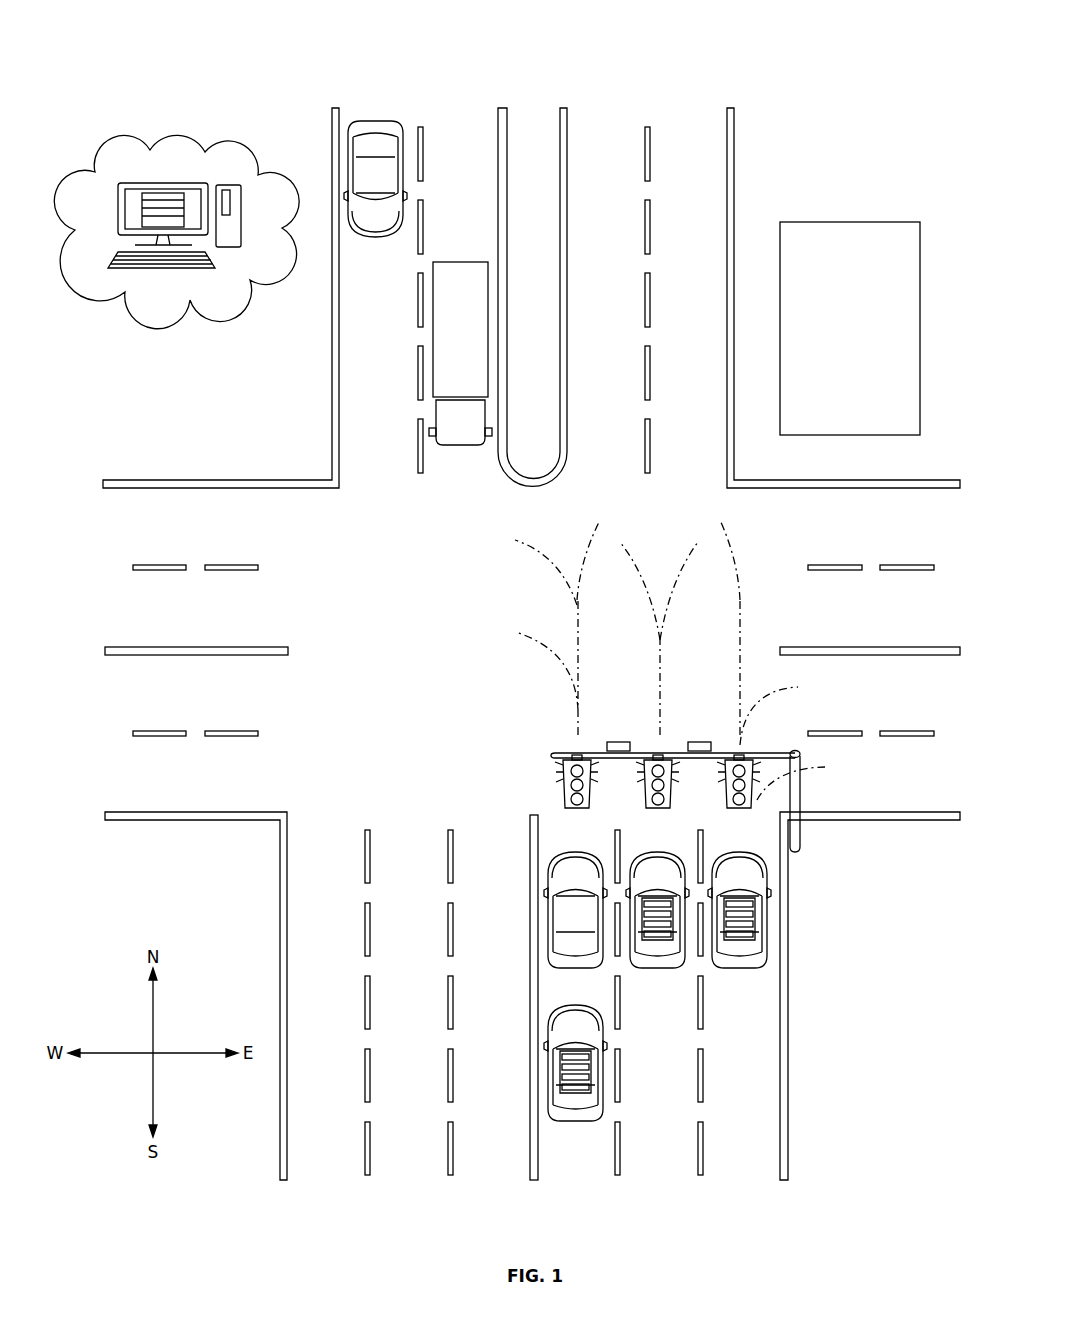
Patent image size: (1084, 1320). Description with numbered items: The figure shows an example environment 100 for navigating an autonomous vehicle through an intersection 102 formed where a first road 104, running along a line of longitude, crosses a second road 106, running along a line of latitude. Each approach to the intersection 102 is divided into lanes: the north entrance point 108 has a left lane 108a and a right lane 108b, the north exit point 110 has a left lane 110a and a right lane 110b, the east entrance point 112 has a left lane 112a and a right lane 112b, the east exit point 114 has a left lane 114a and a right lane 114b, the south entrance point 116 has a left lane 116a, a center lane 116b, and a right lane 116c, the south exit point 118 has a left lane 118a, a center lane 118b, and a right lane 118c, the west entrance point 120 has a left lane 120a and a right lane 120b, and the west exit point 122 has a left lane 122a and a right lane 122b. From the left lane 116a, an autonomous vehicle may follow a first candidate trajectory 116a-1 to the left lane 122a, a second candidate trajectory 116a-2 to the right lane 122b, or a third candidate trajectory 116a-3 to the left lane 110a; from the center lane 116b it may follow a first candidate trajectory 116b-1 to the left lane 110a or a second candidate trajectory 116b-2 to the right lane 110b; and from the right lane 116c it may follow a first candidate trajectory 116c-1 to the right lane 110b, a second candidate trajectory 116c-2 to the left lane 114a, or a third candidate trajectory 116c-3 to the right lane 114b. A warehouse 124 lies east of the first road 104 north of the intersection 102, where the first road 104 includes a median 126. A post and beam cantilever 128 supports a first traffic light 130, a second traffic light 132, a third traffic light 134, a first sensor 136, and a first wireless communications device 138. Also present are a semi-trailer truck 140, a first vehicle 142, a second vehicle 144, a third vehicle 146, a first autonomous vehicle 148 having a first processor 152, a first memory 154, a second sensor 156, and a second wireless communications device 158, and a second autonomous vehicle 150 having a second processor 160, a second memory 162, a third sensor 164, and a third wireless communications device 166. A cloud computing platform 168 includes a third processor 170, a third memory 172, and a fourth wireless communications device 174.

The environment 100 is at (92, 42).
The intersection 102 is at (382, 650).
The first road 104 is at (270, 1185).
The second road 106 is at (97, 475).
The north entrance point 108 is at (345, 476).
The left lane 108a is at (442, 470).
The right lane 108b is at (360, 470).
The north exit point 110 is at (570, 476).
The left lane 110a is at (583, 470).
The right lane 110b is at (668, 470).
The east entrance point 112 is at (778, 640).
The left lane 112a is at (805, 617).
The right lane 112b is at (805, 537).
The east exit point 114 is at (778, 660).
The left lane 114a is at (880, 722).
The right lane 114b is at (880, 805).
The south entrance point 116 is at (770, 822).
The left lane 116a is at (557, 848).
The center lane 116b is at (638, 848).
The right lane 116c is at (719, 848).
The first candidate trajectory 116a-1 is at (508, 631).
The second candidate trajectory 116a-2 is at (508, 538).
The third candidate trajectory 116a-3 is at (602, 511).
The first candidate trajectory 116b-1 is at (617, 534).
The second candidate trajectory 116b-2 is at (700, 534).
The first candidate trajectory 116c-1 is at (717, 511).
The second candidate trajectory 116c-2 is at (806, 687).
The third candidate trajectory 116c-3 is at (833, 767).
The south exit point 118 is at (297, 806).
The left lane 118a is at (473, 848).
The center lane 118b is at (390, 848).
The right lane 118c is at (308, 848).
The west entrance point 120 is at (290, 660).
The left lane 120a is at (238, 700).
The right lane 120b is at (238, 785).
The west exit point 122 is at (290, 492).
The left lane 122a is at (238, 617).
The right lane 122b is at (238, 537).
The warehouse 124 is at (832, 338).
The median 126 is at (516, 303).
The post and beam cantilever 128 is at (800, 800).
The first traffic light 130 is at (555, 767).
The second traffic light 132 is at (630, 758).
The third traffic light 134 is at (712, 758).
The first sensor 136 is at (620, 742).
The first wireless communications device 138 is at (703, 742).
The semi-trailer truck 140 is at (444, 338).
The first vehicle 142 is at (378, 120).
The second vehicle 144 is at (573, 922).
The third vehicle 146 is at (742, 968).
The first autonomous vehicle 148 is at (658, 968).
The second autonomous vehicle 150 is at (575, 1121).
The first processor 152 is at (674, 903).
The first memory 154 is at (674, 913).
The second sensor 156 is at (674, 923).
The second wireless communications device 158 is at (674, 933).
The second processor 160 is at (592, 1057).
The second memory 162 is at (592, 1068).
The third sensor 164 is at (592, 1080).
The third wireless communications device 166 is at (592, 1090).
The cloud computing platform 168 is at (158, 145).
The third processor 170 is at (200, 195).
The third memory 172 is at (148, 205).
The fourth wireless communications device 174 is at (140, 225).